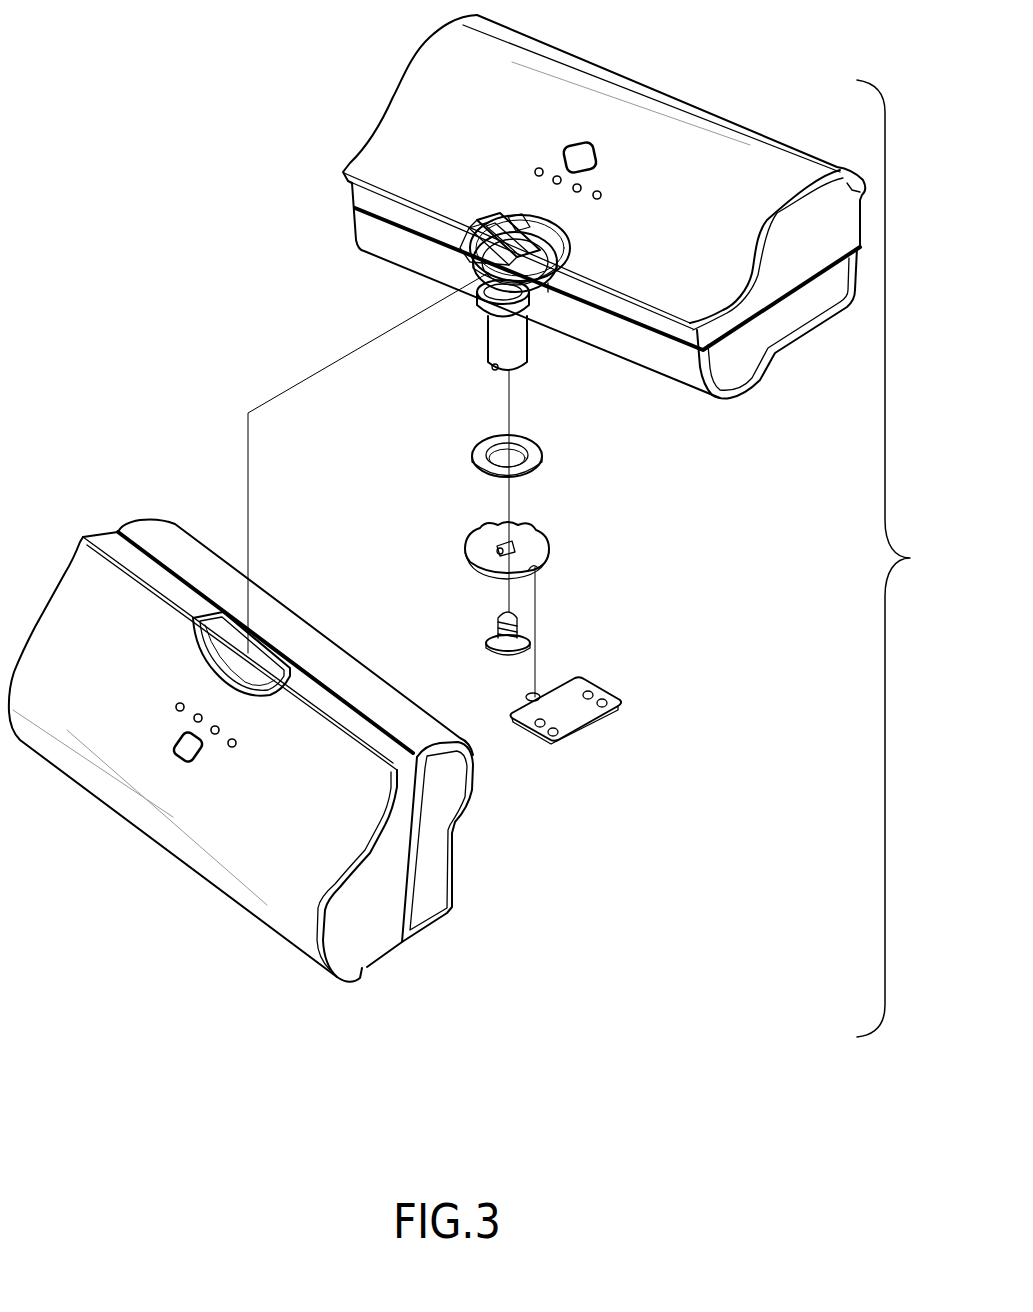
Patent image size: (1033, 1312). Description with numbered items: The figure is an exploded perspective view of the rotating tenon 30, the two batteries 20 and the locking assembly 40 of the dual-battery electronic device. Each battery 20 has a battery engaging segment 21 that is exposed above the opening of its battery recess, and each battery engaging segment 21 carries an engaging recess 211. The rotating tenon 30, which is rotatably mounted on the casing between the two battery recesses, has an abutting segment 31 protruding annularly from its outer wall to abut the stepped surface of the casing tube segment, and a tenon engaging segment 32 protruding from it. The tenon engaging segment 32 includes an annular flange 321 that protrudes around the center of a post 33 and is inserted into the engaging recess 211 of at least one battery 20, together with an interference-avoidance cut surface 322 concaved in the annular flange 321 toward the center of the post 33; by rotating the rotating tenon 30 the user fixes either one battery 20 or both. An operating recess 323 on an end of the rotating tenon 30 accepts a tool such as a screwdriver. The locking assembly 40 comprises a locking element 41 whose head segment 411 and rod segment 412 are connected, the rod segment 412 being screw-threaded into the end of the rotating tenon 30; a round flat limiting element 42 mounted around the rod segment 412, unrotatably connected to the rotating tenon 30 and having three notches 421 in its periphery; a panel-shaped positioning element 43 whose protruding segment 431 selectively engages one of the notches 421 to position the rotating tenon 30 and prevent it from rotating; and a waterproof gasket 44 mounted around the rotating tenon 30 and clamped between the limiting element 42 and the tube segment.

The battery 20 is at (630, 96).
The battery engaging segment 21 is at (544, 232).
The engaging recess 211 is at (207, 618).
The rotating tenon 30 is at (471, 314).
The abutting segment 31 is at (495, 305).
The tenon engaging segment 32 is at (471, 314).
The annular flange 321 is at (547, 304).
The interference-avoidance cut surface 322 is at (476, 262).
The operating recess 323 is at (518, 222).
The post 33 is at (490, 290).
The locking assembly 40 is at (523, 589).
The locking element 41 is at (459, 641).
The head segment 411 is at (500, 653).
The rod segment 412 is at (498, 617).
The limiting element 42 is at (540, 609).
The notch 421 is at (533, 567).
The positioning element 43 is at (553, 703).
The protruding segment 431 is at (527, 697).
The waterproof gasket 44 is at (485, 470).